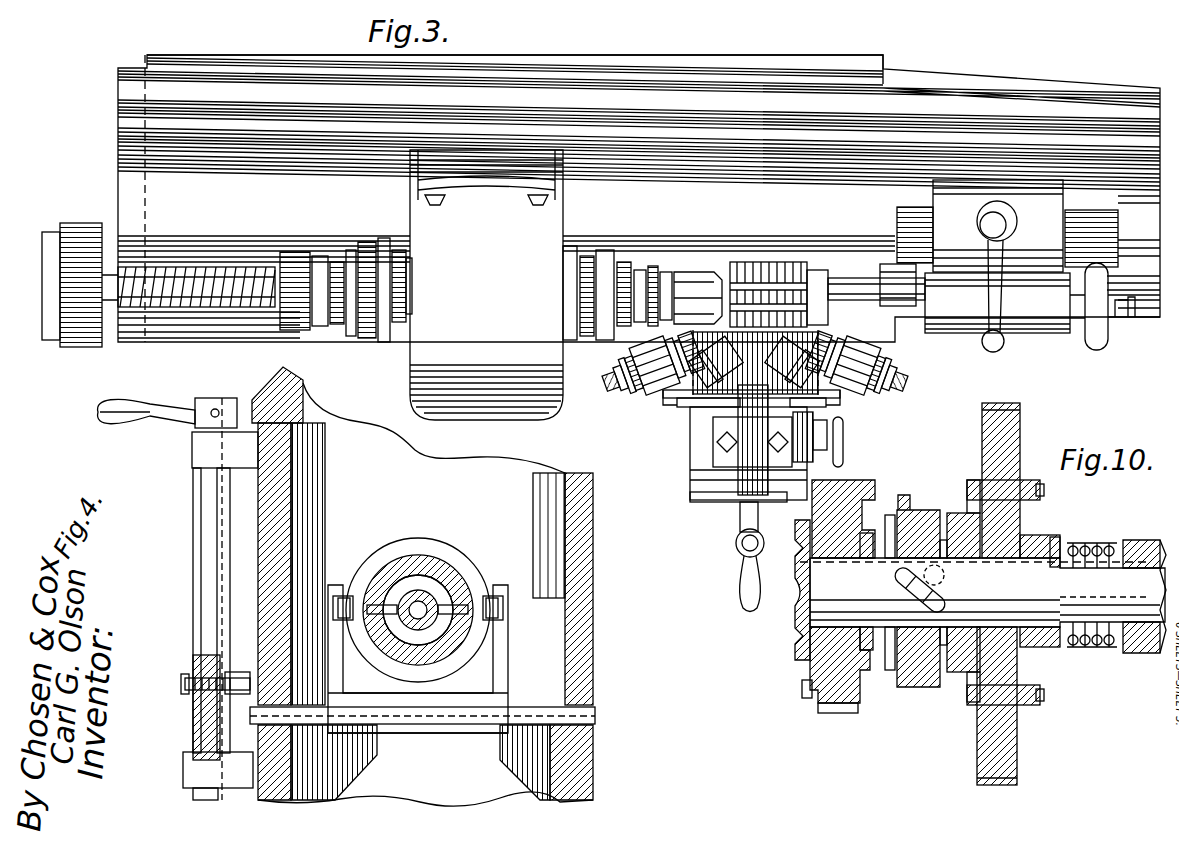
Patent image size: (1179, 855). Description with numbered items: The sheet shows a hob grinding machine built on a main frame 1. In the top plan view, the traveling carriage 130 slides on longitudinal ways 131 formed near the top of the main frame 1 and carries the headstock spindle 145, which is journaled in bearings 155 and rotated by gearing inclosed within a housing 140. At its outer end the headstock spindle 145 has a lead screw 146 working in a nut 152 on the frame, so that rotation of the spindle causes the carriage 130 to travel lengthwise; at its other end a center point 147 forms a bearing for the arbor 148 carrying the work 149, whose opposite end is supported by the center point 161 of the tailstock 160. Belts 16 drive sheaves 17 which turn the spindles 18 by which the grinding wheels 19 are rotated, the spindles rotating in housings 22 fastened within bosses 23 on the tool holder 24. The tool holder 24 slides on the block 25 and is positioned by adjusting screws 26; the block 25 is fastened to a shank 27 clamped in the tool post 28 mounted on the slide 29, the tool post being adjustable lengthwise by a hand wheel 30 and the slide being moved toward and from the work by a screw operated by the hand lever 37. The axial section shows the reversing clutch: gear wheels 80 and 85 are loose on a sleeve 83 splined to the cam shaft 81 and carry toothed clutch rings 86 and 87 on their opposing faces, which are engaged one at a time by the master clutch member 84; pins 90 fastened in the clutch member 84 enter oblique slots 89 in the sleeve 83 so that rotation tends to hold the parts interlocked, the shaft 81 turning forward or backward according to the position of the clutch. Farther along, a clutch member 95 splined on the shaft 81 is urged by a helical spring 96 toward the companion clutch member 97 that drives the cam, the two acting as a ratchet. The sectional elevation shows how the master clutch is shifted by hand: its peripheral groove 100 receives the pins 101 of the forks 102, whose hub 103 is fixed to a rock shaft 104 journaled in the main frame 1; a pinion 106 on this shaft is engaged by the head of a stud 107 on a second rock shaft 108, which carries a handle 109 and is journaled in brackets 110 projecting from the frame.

In FIG. 3, the main frame 1 is at (855, 68).
In FIG. 4, the main frame 1 is at (580, 641).
In FIG. 10, the main frame 1 is at (792, 640).
In FIG. 3, the belts 16 is at (632, 392).
In FIG. 3, the sheaves 17 is at (620, 356).
In FIG. 3, the spindles 18 is at (790, 366).
In FIG. 3, the grinding wheels 19 is at (730, 366).
In FIG. 3, the housings 22 is at (652, 348).
In FIG. 3, the bosses 23 is at (680, 350).
In FIG. 3, the tool holder 24 is at (722, 396).
In FIG. 3, the block 25 is at (722, 416).
In FIG. 3, the adjusting screws 26 is at (700, 410).
In FIG. 3, the shank 27 is at (752, 492).
In FIG. 3, the tool post 28 is at (720, 466).
In FIG. 3, the slide 29 is at (655, 402).
In FIG. 3, the hand wheel 30 is at (843, 438).
In FIG. 3, the hand lever 37 is at (740, 580).
In FIG. 10, the gear wheel 80 is at (1004, 740).
In FIG. 4, the cam shaft 81 is at (395, 600).
In FIG. 10, the cam shaft 81 is at (1128, 580).
In FIG. 4, the sleeve 83 is at (414, 584).
In FIG. 10, the sleeve 83 is at (1020, 575).
In FIG. 4, the clutch member 84 is at (452, 562).
In FIG. 10, the clutch member 84 is at (918, 680).
In FIG. 10, the gear wheel 85 is at (812, 672).
In FIG. 10, the toothed clutch ring 86 is at (962, 513).
In FIG. 10, the toothed clutch ring 87 is at (888, 522).
In FIG. 4, the oblique slots 89 is at (466, 606).
In FIG. 10, the oblique slots 89 is at (905, 592).
In FIG. 4, the pins 90 is at (378, 606).
In FIG. 10, the pins 90 is at (940, 606).
In FIG. 10, the clutch member 95 is at (1128, 652).
In FIG. 10, the helical spring 96 is at (1092, 546).
In FIG. 10, the clutch member 97 is at (1158, 655).
In FIG. 4, the peripheral groove 100 is at (432, 544).
In FIG. 10, the peripheral groove 100 is at (946, 512).
In FIG. 4, the pins 101 is at (345, 603).
In FIG. 4, the forks 102 is at (335, 645).
In FIG. 4, the hub 103 is at (466, 724).
In FIG. 4, the rock shaft 104 is at (578, 715).
In FIG. 4, the pinion 106 is at (206, 735).
In FIG. 4, the stud 107 is at (226, 672).
In FIG. 4, the second rock shaft 108 is at (200, 618).
In FIG. 4, the handle 109 is at (128, 416).
In FIG. 4, the brackets 110 is at (210, 447).
In FIG. 3, the carriage 130 is at (990, 108).
In FIG. 4, the carriage 130 is at (284, 380).
In FIG. 4, the longitudinal ways 131 is at (262, 392).
In FIG. 3, the housing 140 is at (428, 396).
In FIG. 3, the headstock spindle 145 is at (352, 340).
In FIG. 3, the lead screw 146 is at (222, 309).
In FIG. 3, the center point 147 is at (690, 286).
In FIG. 3, the arbor 148 is at (735, 268).
In FIG. 3, the work 149 is at (805, 270).
In FIG. 3, the nut 152 is at (65, 282).
In FIG. 3, the bearings 155 is at (410, 250).
In FIG. 3, the tailstock 160 is at (1046, 324).
In FIG. 3, the center point 161 is at (890, 285).